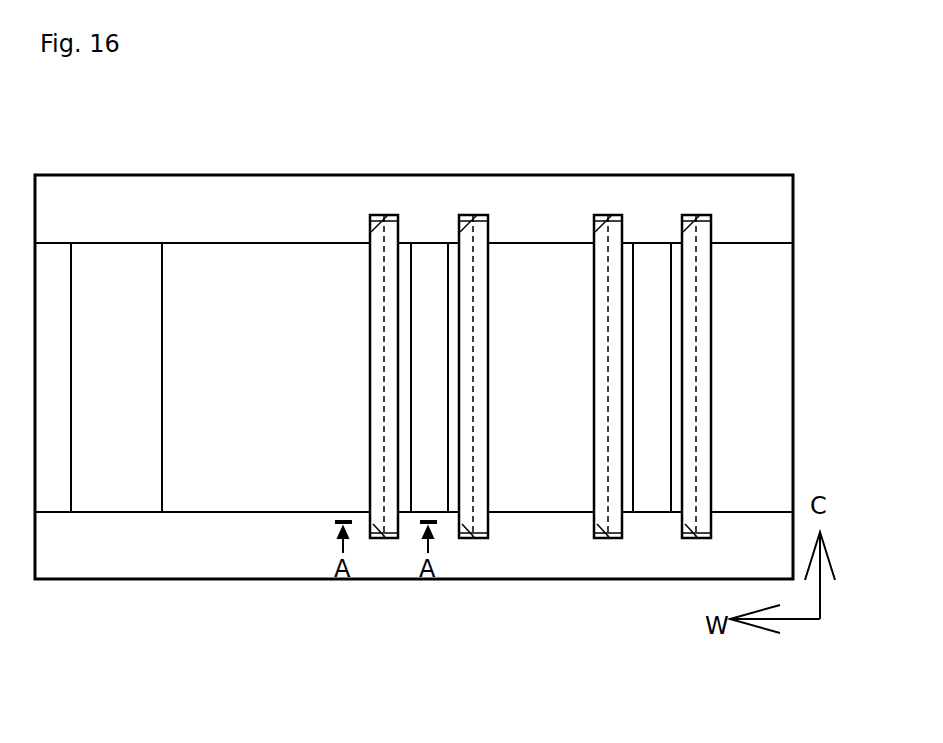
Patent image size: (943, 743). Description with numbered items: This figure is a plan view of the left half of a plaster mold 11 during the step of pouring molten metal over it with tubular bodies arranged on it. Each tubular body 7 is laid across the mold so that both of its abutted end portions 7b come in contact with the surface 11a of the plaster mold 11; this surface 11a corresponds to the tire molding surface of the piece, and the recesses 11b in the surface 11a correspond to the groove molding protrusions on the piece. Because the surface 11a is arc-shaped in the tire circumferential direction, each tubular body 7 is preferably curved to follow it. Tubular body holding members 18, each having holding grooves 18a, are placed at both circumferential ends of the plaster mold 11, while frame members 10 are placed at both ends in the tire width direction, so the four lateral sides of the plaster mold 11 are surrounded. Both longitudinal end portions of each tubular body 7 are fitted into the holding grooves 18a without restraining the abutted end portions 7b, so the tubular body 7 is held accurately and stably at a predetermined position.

The tubular body 7 is at (530, 354).
The abutted end portions 7b is at (385, 428).
The frame members 10 is at (57, 502).
The plaster mold 11 is at (120, 243).
The surface 11a is at (297, 265).
The recesses 11b is at (430, 262).
The tubular body holding members 18 is at (213, 172).
The holding grooves 18a is at (384, 220).